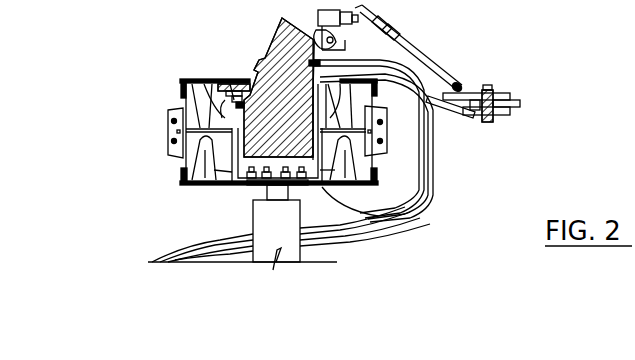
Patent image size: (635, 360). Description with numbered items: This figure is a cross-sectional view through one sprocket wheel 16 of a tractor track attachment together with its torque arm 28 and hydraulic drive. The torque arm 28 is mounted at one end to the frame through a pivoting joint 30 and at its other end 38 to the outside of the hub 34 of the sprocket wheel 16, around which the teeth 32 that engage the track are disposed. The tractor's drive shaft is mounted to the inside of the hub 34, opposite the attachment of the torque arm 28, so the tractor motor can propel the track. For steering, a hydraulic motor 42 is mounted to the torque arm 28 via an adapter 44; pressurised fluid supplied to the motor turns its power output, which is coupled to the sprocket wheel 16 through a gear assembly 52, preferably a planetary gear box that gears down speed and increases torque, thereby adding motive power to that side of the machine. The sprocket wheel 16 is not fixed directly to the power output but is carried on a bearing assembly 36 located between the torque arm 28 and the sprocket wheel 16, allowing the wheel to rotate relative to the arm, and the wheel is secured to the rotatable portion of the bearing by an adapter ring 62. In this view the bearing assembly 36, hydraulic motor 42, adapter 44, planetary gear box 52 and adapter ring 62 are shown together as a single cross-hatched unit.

The sprocket wheel 16 is at (150, 84).
The torque arm 28 is at (448, 108).
The pivoting joint 30 is at (488, 128).
The teeth 32 is at (168, 142).
The hub 34 is at (375, 222).
The bearing assembly 36 is at (188, 81).
The end 38 is at (222, 188).
The hydraulic motor 42 is at (188, 81).
The adapter 44 is at (188, 81).
The gear assembly 52 is at (262, 30).
The adapter ring 62 is at (225, 85).